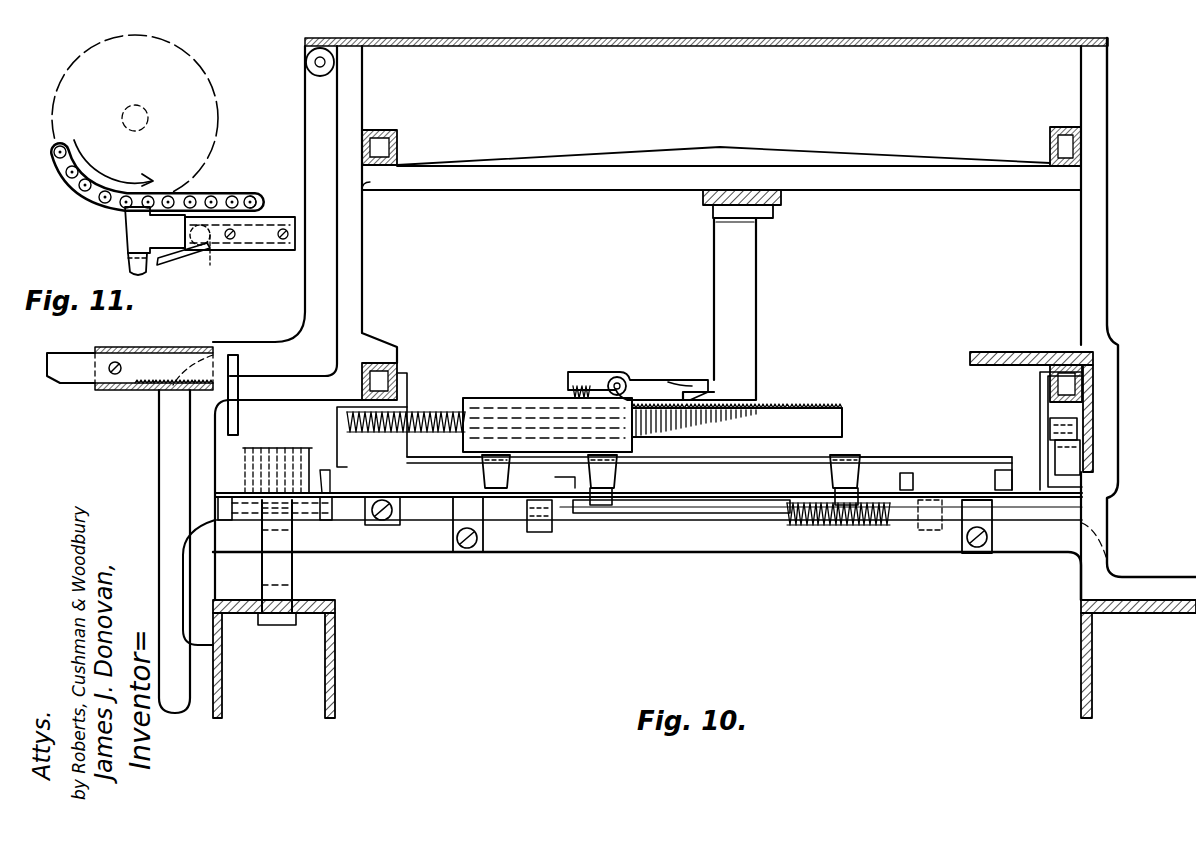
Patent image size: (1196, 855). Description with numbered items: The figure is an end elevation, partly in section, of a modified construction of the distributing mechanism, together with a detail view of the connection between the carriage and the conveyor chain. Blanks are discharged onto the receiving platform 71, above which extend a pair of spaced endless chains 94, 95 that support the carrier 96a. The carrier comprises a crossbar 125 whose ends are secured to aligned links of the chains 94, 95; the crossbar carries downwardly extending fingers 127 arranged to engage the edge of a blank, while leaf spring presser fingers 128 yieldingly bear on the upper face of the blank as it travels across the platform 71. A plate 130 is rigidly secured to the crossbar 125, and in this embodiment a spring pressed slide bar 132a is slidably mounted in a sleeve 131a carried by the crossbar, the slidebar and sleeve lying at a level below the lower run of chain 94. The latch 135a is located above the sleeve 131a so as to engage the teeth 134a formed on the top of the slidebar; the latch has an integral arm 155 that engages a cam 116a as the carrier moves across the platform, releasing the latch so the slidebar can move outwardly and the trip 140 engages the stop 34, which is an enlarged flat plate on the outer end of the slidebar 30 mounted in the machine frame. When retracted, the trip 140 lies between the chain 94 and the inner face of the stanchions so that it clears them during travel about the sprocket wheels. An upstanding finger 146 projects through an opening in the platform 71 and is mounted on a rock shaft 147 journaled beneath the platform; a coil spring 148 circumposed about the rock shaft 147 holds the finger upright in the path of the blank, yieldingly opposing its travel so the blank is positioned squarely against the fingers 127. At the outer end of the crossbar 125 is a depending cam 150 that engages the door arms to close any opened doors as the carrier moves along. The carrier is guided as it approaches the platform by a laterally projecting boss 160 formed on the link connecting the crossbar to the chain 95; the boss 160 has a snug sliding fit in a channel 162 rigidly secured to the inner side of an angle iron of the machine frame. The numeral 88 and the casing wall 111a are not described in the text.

In FIG. 10, the slidebar 30 is at (65, 360).
In FIG. 10, the stop 34 is at (238, 418).
In FIG. 10, the receiving platform 71 is at (402, 502).
In FIG. 10, the spring 88 is at (312, 465).
In FIG. 10, the endless chain 94 is at (397, 142).
In FIG. 10, the endless chain 95 is at (1050, 140).
In FIG. 11, the endless chain 95 is at (82, 192).
In FIG. 10, the carrier 96a is at (482, 364).
In FIG. 10, the casing wall 111a is at (1107, 290).
In FIG. 10, the cam 116a is at (706, 380).
In FIG. 10, the crossbar 125 is at (985, 455).
In FIG. 10, the downwardly extending fingers 127 is at (482, 472).
In FIG. 10, the leaf spring presser finger 128 is at (603, 505).
In FIG. 10, the plate 130 is at (492, 457).
In FIG. 10, the sleeve 131a is at (515, 388).
In FIG. 10, the slide bar 132a is at (843, 414).
In FIG. 10, the teeth 134a is at (783, 405).
In FIG. 10, the latch 135a is at (590, 372).
In FIG. 10, the trip 140 is at (337, 422).
In FIG. 10, the upstanding finger 146 is at (555, 480).
In FIG. 10, the rock shaft 147 is at (730, 513).
In FIG. 10, the coil spring 148 is at (845, 525).
In FIG. 10, the depending cam 150 is at (1040, 460).
In FIG. 11, the depending cam 150 is at (140, 274).
In FIG. 10, the arm 155 is at (672, 384).
In FIG. 10, the boss 160 is at (1077, 426).
In FIG. 11, the boss 160 is at (210, 262).
In FIG. 10, the channel 162 is at (1080, 455).
In FIG. 11, the channel 162 is at (268, 252).